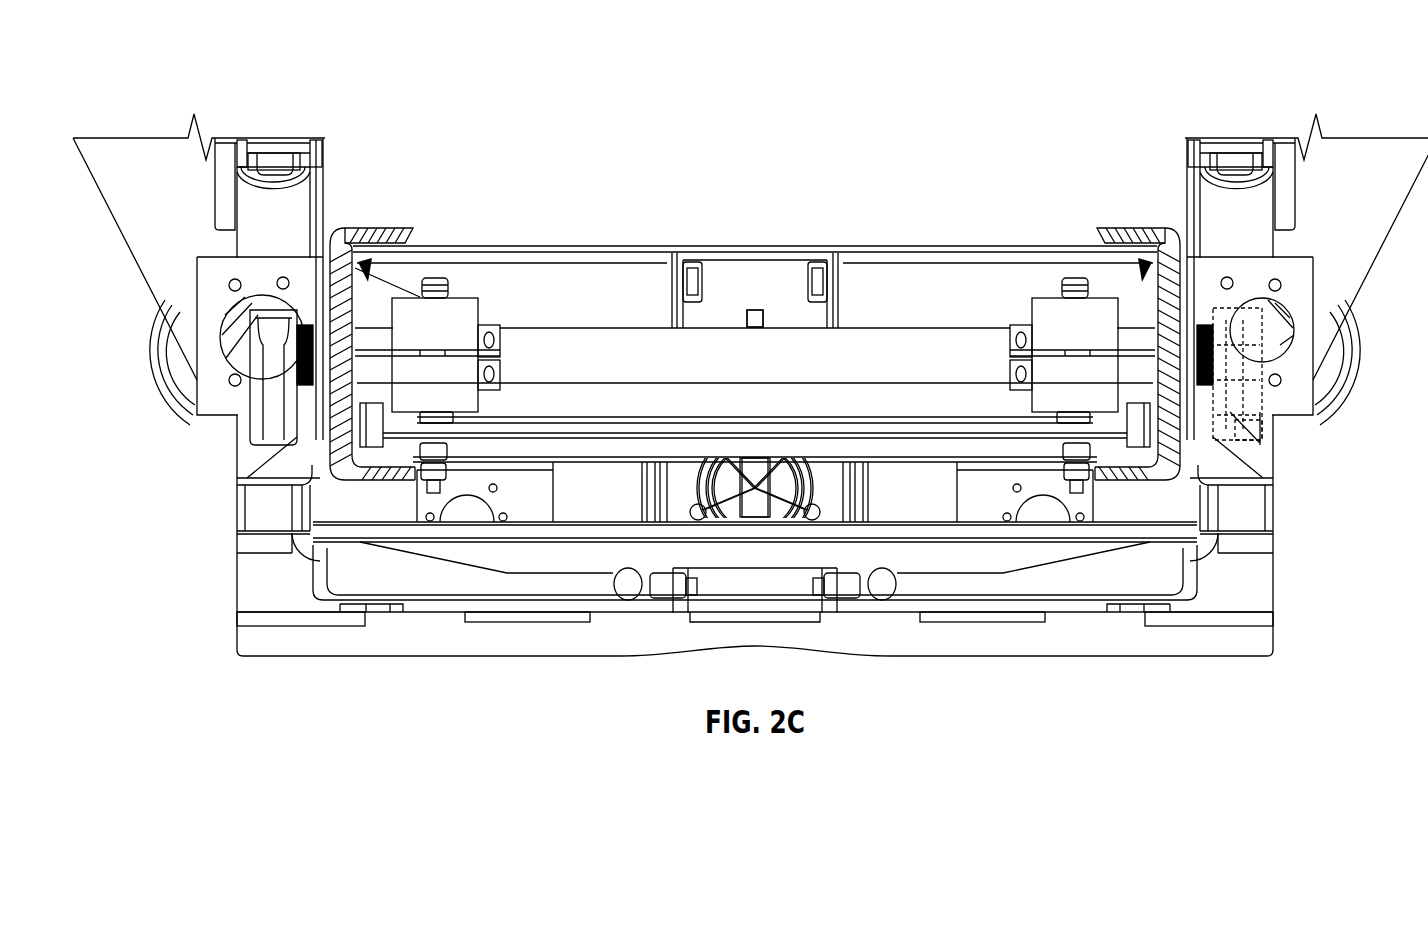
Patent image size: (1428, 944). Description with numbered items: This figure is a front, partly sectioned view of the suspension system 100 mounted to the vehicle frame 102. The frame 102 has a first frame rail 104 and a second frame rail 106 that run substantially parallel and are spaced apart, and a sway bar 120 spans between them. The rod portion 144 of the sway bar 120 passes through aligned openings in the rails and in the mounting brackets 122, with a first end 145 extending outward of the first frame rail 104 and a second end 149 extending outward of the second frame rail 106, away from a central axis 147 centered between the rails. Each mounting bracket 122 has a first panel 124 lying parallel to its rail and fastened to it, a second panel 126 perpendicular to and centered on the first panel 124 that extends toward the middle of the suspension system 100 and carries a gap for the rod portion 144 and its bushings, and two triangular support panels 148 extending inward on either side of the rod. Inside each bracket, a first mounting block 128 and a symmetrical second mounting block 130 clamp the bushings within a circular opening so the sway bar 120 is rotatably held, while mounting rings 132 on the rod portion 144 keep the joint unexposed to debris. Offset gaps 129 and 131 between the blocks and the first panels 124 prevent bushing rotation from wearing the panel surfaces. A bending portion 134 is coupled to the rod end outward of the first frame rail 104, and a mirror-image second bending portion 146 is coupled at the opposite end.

The suspension system 100 is at (627, 208).
The frame 102 is at (1302, 522).
The first frame rail 104 is at (392, 222).
The second frame rail 106 is at (1119, 197).
The sway bar 120 is at (756, 276).
The mounting bracket 122 is at (305, 311).
The first panel 124 is at (323, 343).
The second panel 126 is at (323, 367).
The first mounting block 128 is at (465, 318).
The offset gap 129 is at (374, 402).
The second mounting block 130 is at (443, 393).
The offset gap 131 is at (1136, 402).
The mounting ring 132 is at (490, 315).
The bending portion 134 is at (259, 432).
The rod portion 144 is at (850, 352).
The first end 145 is at (363, 307).
The second bending portion 146 is at (1260, 438).
The central axis 147 is at (765, 355).
The support panel 148 is at (368, 283).
The second end 149 is at (1200, 313).